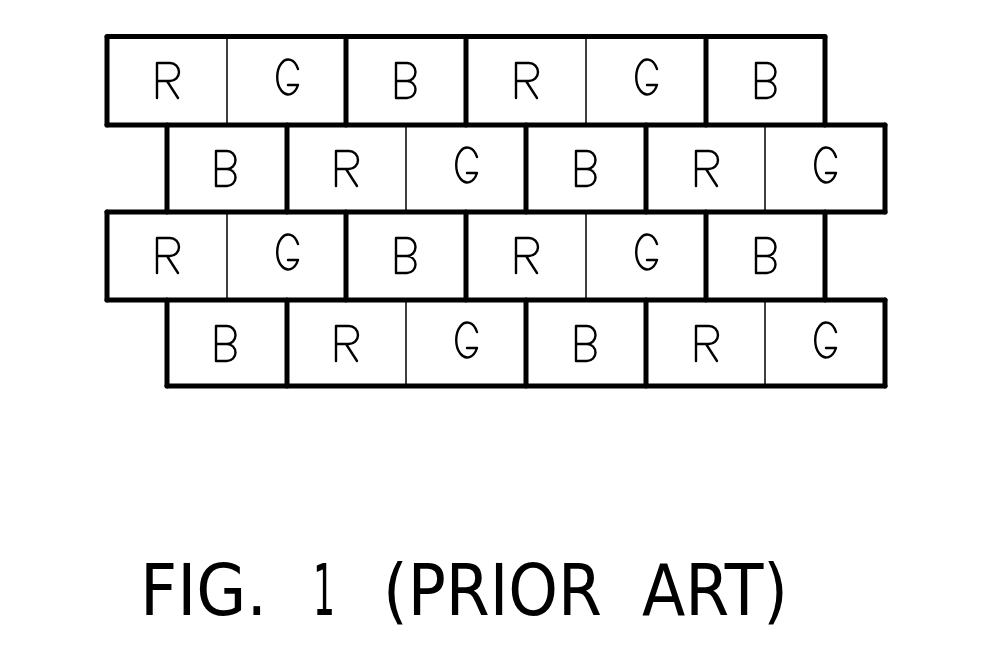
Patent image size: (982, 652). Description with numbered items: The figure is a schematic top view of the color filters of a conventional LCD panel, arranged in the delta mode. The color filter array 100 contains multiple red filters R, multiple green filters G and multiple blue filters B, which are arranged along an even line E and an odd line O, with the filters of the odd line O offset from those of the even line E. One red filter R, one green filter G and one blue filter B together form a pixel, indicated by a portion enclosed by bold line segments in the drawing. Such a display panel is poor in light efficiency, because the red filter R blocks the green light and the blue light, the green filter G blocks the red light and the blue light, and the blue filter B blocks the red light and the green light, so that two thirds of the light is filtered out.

The color filter array 100 is at (458, 244).
The even line E is at (447, 123).
The odd line O is at (60, 220).
The red filter R is at (437, 124).
The green filter G is at (556, 121).
The blue filter B is at (496, 124).